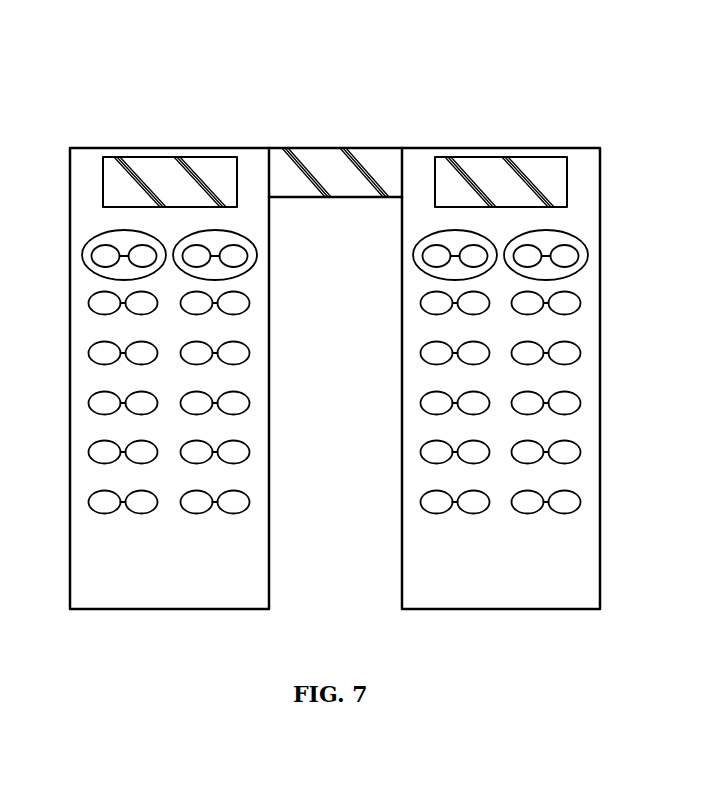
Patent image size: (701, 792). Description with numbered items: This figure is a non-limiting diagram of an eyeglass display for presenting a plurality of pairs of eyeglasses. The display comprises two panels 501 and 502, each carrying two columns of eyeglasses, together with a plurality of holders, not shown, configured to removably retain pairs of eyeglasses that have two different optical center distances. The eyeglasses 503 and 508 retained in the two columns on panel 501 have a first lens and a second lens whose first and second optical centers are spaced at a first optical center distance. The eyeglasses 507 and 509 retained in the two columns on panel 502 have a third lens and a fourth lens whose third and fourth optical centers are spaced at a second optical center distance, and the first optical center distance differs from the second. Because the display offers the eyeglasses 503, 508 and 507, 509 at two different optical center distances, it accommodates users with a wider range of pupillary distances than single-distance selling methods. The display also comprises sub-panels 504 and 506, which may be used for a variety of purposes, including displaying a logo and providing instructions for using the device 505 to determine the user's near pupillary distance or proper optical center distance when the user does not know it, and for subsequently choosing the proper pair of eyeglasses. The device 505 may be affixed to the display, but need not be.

The panel 501 is at (487, 346).
The panel 502 is at (174, 341).
The eyeglasses 503 is at (101, 235).
The sub-panel 504 is at (157, 166).
The device 505 is at (330, 170).
The sub-panel 506 is at (490, 167).
The eyeglasses 507 is at (568, 233).
The eyeglasses 508 is at (258, 256).
The eyeglasses 509 is at (412, 273).